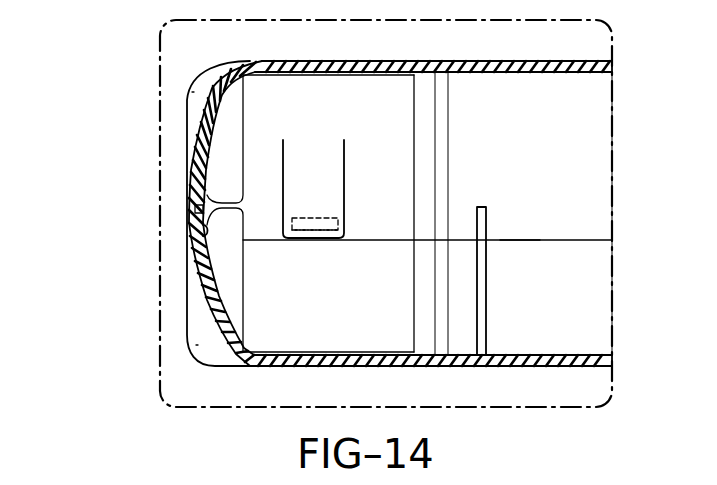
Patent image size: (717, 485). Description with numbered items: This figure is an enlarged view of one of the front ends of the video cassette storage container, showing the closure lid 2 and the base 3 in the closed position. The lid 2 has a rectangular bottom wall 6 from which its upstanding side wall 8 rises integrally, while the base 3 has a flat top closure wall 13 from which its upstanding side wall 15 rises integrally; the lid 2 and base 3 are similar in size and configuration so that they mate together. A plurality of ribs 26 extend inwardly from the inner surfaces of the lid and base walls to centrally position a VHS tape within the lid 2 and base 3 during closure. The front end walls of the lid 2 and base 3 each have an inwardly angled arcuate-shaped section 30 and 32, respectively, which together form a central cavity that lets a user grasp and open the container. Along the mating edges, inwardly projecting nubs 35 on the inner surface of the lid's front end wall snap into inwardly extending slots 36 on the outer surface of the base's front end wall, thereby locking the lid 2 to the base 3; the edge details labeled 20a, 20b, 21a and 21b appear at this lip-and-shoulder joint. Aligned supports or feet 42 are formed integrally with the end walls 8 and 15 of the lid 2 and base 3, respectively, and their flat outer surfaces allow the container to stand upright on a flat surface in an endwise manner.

The closure lid 2 is at (577, 315).
The base 3 is at (557, 157).
The bottom wall 6 is at (513, 353).
The side wall 8 is at (195, 318).
The top closure wall 13 is at (520, 72).
The side wall 15 is at (188, 140).
The panel 20a is at (200, 232).
The panel 20b is at (200, 236).
The hinge 21a is at (190, 210).
The hinge 21b is at (533, 240).
The ribs 26 is at (243, 115).
The inwardly angled arcuate-shaped section 30 is at (588, 332).
The inwardly angled arcuate-shaped section 32 is at (573, 103).
The nubs 35 is at (315, 218).
The slots 36 is at (330, 218).
The supports 42 is at (186, 94).